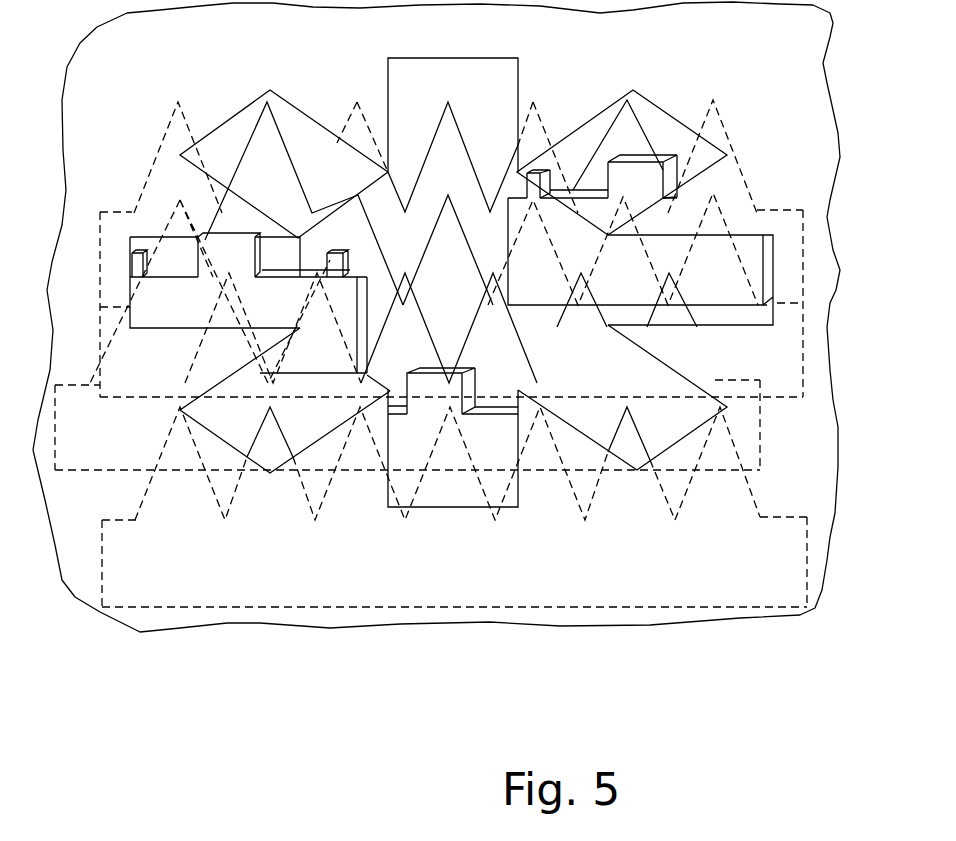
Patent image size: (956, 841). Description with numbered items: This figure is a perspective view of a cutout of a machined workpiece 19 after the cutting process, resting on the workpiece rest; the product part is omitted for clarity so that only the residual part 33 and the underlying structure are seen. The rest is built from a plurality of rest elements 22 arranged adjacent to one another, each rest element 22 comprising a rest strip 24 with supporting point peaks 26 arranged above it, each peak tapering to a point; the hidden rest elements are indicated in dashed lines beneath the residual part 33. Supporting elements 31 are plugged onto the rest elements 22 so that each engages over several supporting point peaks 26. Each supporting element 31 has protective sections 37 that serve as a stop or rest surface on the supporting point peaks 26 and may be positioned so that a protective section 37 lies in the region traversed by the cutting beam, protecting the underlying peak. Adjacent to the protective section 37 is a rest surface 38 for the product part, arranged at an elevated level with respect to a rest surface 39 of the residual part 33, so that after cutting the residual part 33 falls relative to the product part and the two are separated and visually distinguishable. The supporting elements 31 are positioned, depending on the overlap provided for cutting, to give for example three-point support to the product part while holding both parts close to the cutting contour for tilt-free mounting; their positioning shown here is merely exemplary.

The workpiece 19 is at (217, 667).
The rest element 22 is at (480, 152).
The rest strip 24 is at (404, 247).
The supporting point peak 26 is at (448, 130).
The supporting element 31 is at (628, 148).
The residual part 33 is at (289, 607).
The protective section 37 is at (147, 277).
The rest surface for the product part 38 is at (228, 237).
The rest surface of the residual part 39 is at (343, 252).